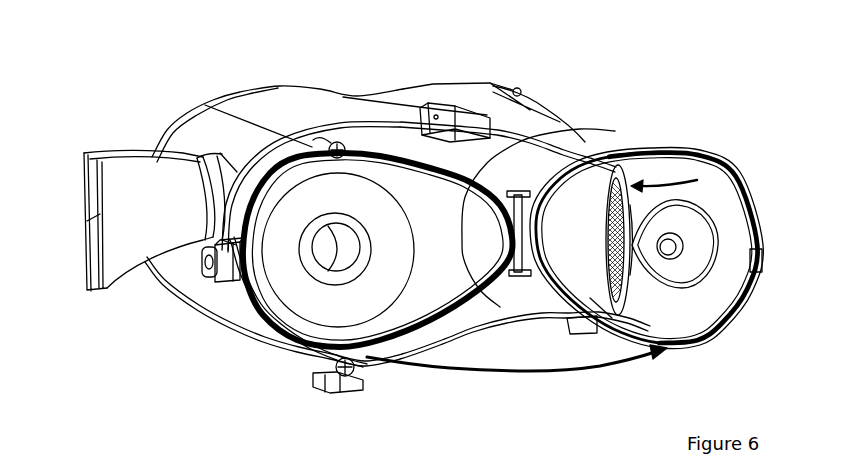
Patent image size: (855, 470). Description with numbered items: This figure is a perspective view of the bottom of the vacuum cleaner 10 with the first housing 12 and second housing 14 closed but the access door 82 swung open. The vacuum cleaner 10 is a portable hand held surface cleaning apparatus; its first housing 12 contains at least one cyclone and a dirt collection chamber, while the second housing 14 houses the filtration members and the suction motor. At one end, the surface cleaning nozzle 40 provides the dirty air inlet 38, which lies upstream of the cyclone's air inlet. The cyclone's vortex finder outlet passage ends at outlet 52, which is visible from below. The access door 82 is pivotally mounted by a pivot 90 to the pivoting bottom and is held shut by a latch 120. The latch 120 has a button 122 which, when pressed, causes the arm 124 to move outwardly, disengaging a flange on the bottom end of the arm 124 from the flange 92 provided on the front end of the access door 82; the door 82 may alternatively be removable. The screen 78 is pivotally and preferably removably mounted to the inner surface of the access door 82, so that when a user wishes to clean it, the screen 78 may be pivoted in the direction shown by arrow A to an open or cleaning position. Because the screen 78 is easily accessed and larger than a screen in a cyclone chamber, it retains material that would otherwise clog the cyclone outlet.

The vacuum cleaner 10 is at (414, 46).
The first housing 12 is at (241, 102).
The second housing 14 is at (538, 127).
The dirty air inlet 38 is at (87, 155).
The surface cleaning nozzle 40 is at (118, 167).
The outlet 52 is at (336, 266).
The screen 78 is at (612, 322).
The access door 82 is at (752, 298).
The pivot 90 is at (522, 277).
The flange 92 is at (762, 256).
The latch 120 is at (212, 268).
The button 122 is at (208, 258).
The arm 124 is at (223, 272).
The arrow A is at (672, 285).